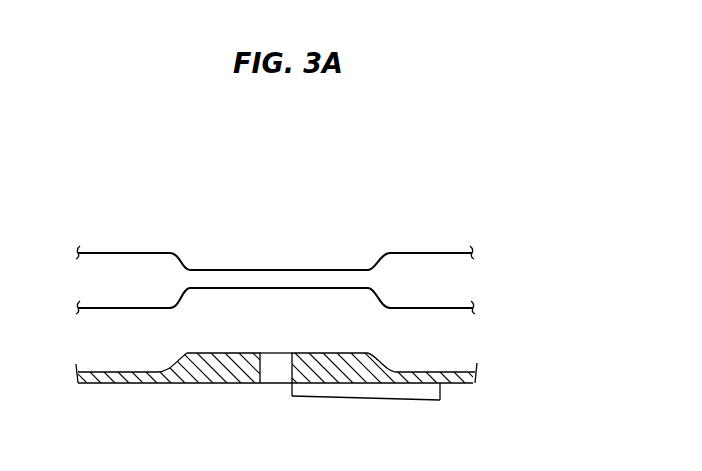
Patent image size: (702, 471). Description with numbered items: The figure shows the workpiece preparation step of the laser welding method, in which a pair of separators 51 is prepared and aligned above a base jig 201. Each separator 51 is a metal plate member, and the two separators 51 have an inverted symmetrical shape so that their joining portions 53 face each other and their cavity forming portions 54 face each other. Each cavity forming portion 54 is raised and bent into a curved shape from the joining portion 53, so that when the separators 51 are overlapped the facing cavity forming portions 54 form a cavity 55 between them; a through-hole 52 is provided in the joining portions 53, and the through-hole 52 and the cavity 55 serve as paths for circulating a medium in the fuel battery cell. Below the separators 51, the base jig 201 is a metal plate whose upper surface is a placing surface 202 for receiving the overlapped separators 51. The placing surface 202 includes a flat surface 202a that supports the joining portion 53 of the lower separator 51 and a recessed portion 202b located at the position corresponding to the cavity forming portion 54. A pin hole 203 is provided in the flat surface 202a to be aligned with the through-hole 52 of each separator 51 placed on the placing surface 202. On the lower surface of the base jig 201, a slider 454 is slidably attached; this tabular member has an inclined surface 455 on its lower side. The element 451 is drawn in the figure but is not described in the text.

The separator 51 is at (462, 253).
The through-hole 52 is at (306, 273).
The joining portion 53 is at (348, 277).
The cavity forming portion 54 is at (113, 305).
The cavity 55 is at (142, 280).
The base jig 201 is at (475, 371).
The placing surface 202 is at (413, 372).
The flat surface 202a is at (232, 352).
The recessed portion 202b is at (423, 372).
The pin hole 203 is at (270, 377).
The pedestal 451 is at (414, 411).
The slider 454 is at (440, 392).
The inclined surface 455 is at (407, 400).